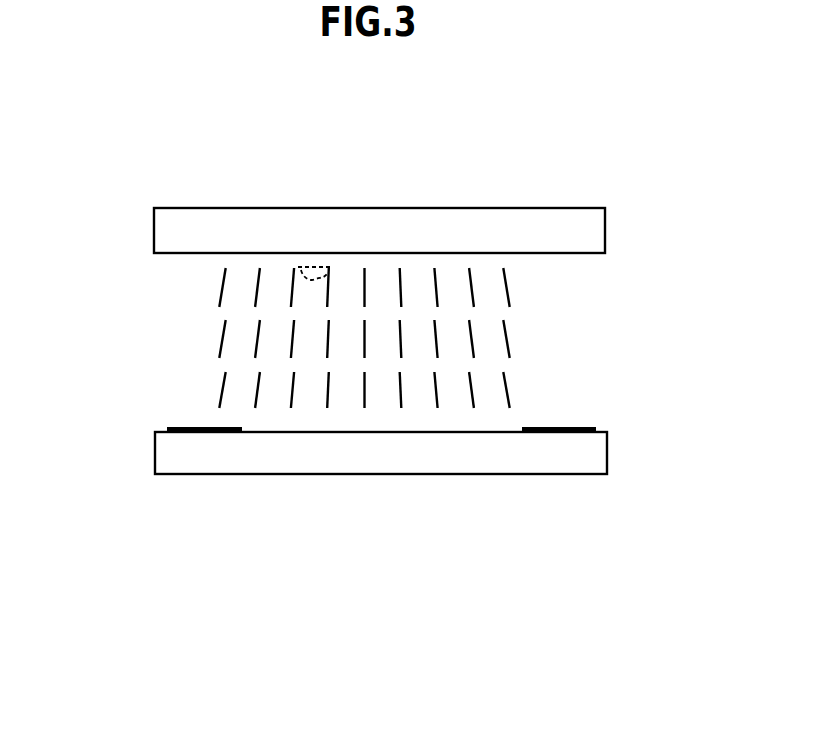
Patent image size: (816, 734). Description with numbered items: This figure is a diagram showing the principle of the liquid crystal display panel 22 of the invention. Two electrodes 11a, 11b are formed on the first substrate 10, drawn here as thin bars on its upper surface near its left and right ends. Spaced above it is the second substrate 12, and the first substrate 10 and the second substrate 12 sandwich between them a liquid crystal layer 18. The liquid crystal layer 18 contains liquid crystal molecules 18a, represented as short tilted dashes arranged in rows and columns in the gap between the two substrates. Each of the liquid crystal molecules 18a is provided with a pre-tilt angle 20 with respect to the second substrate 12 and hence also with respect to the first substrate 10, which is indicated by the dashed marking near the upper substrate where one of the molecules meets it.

The liquid crystal cell 22 is at (87, 178).
The second substrate 12 is at (417, 204).
The pre-tilt angle 20 is at (298, 267).
The liquid crystal layer 18 is at (440, 338).
The liquid crystal molecules 18a is at (507, 285).
The first substrate 10 is at (600, 455).
The electrode 11a is at (200, 426).
The electrode 11b is at (558, 426).